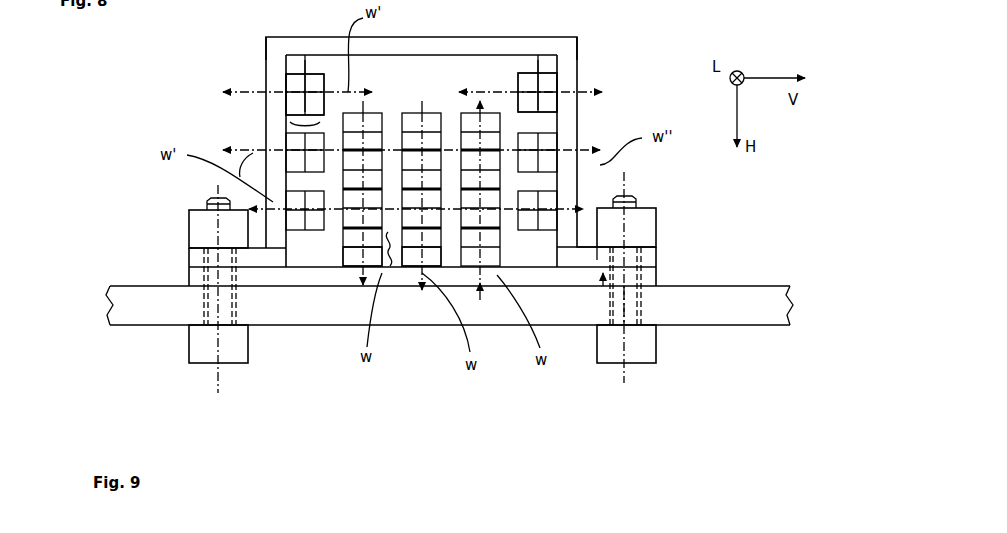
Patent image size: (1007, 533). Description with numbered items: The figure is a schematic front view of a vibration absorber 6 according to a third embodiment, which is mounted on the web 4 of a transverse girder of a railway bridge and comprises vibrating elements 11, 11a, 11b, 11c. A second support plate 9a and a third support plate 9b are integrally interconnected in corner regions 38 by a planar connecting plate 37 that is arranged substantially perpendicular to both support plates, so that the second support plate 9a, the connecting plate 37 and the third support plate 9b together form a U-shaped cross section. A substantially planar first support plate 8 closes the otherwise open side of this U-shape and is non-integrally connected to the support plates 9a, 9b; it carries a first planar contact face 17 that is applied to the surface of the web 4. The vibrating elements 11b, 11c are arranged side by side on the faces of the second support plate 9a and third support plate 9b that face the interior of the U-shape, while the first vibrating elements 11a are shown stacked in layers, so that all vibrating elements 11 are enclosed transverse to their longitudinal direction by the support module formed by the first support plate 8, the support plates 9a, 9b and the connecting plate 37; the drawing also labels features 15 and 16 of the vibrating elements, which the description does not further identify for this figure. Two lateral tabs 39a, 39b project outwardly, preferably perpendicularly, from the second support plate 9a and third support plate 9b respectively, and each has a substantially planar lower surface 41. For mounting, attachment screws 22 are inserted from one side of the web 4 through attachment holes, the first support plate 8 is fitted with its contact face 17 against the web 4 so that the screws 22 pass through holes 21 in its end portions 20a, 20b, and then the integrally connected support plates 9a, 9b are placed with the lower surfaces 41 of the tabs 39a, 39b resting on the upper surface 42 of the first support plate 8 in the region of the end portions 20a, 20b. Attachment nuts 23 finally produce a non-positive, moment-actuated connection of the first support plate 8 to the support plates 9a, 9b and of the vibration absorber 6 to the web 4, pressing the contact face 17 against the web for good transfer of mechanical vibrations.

The web 4 is at (722, 298).
The vibration absorber 6 is at (147, 132).
The first support plate 8 is at (330, 283).
The second support plate 9a is at (288, 122).
The third support plate 9b is at (567, 127).
The vibrating element 11 is at (488, 90).
The first vibrating element 11a is at (393, 253).
The vibrating element 11b is at (282, 125).
The vibrating element 11c is at (548, 270).
The recess 15 is at (297, 82).
The web 16 is at (306, 70).
The first planar contact face 17 is at (410, 290).
The end portion 20a is at (200, 260).
The end portion 20b is at (647, 275).
The hole 21 is at (200, 280).
The attachment screw 22 is at (183, 347).
The attachment nut 23 is at (185, 222).
The connecting plate 37 is at (425, 47).
The corner region 38 is at (258, 53).
The lateral tab 39a is at (200, 225).
The lateral tab 39b is at (645, 258).
The lower surface 41 is at (603, 250).
The upper surface 42 is at (605, 248).